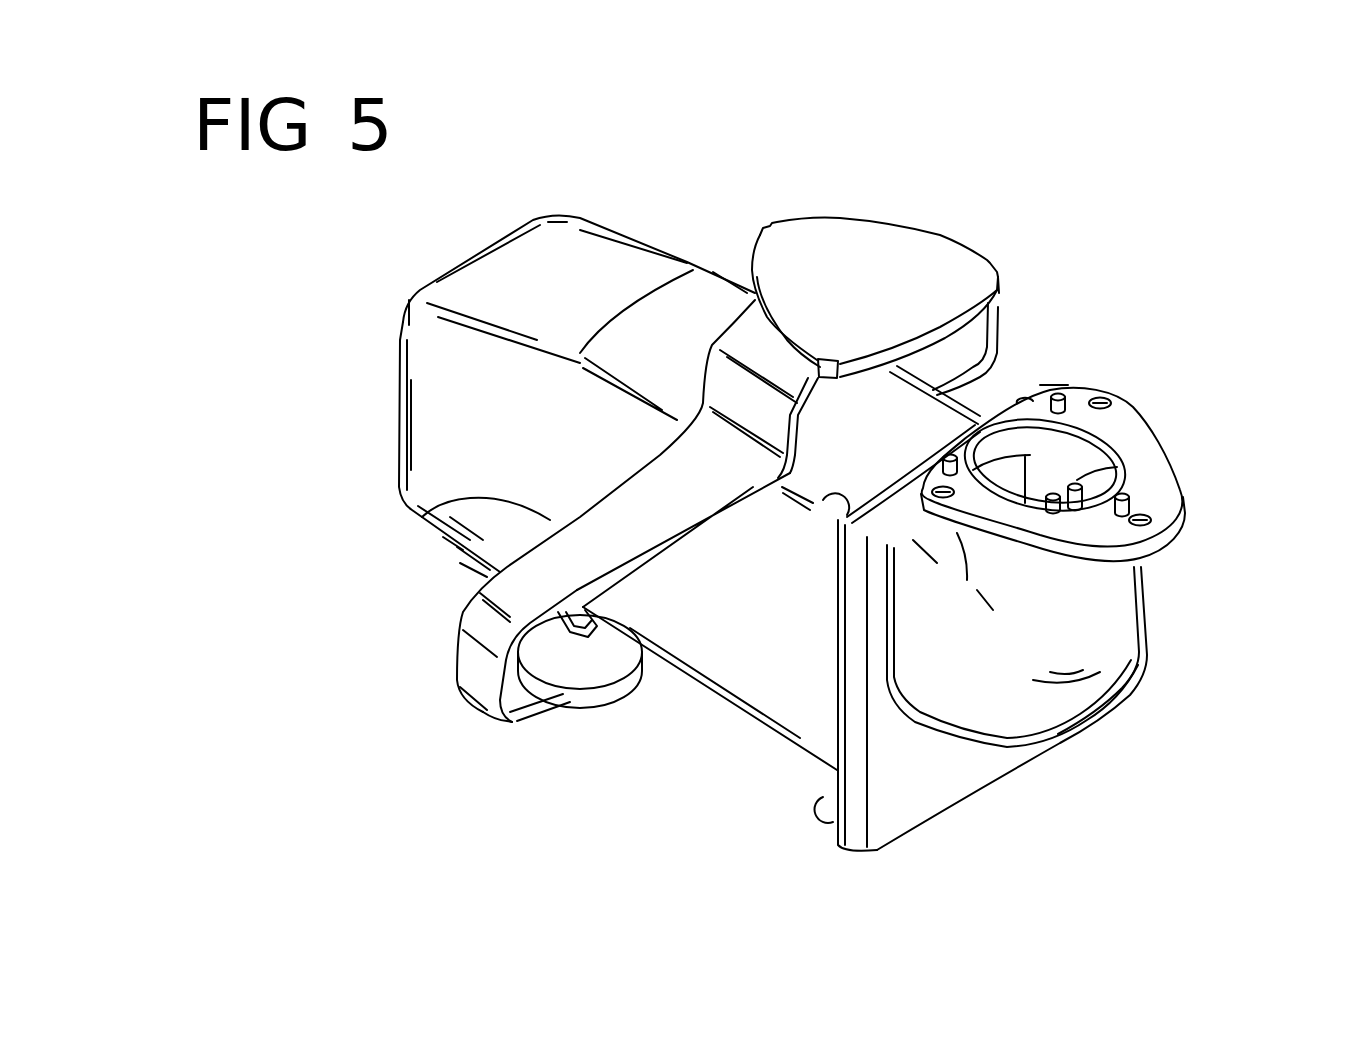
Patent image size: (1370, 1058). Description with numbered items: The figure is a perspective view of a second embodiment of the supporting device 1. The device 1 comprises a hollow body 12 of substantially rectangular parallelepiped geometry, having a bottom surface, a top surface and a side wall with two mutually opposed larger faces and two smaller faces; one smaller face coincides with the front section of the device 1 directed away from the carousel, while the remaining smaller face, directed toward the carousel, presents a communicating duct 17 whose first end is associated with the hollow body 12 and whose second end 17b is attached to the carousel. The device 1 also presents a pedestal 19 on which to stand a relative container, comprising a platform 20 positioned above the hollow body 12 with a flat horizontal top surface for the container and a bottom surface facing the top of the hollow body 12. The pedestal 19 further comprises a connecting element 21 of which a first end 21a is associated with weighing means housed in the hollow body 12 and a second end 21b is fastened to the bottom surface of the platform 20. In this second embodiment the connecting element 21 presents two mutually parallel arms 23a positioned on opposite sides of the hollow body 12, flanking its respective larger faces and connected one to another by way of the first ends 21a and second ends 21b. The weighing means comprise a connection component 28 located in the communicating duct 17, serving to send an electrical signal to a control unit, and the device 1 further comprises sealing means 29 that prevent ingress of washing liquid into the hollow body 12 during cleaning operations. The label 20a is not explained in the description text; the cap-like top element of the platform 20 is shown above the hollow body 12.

The device 1 is at (353, 747).
The hollow body 12 is at (506, 222).
The communicating duct 17 is at (1094, 642).
The second end 17b is at (1090, 455).
The pedestal 19 is at (840, 248).
The platform 20 is at (982, 238).
The cap flange 20a is at (888, 250).
The connecting element 21 is at (553, 523).
The first end 21a is at (533, 710).
The second end 21b is at (735, 332).
The arms 23a is at (990, 335).
The connection component 28 is at (1100, 468).
The sealing means 29 is at (597, 718).